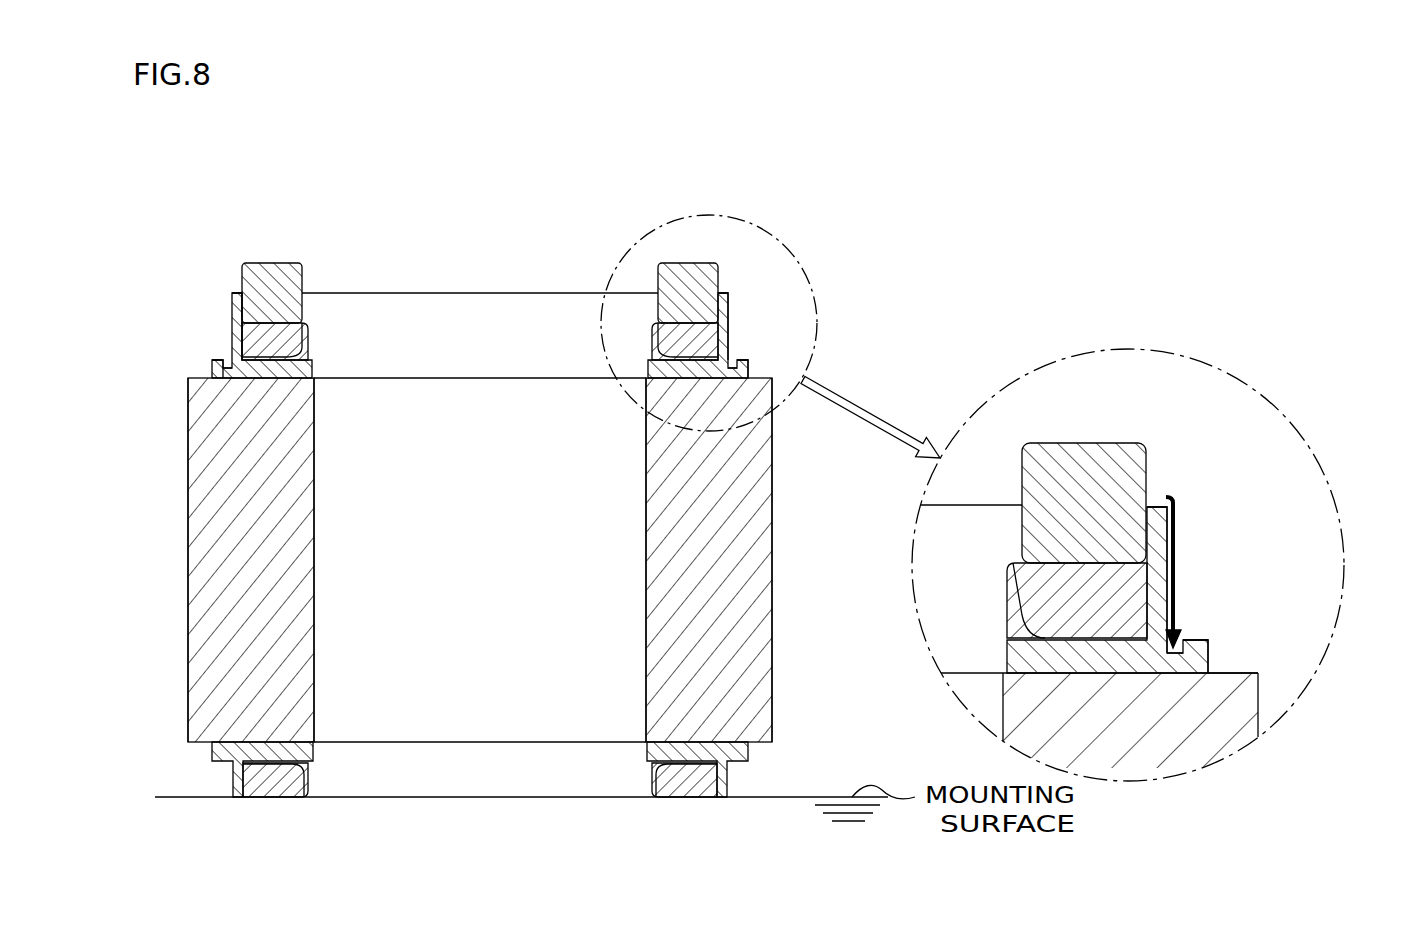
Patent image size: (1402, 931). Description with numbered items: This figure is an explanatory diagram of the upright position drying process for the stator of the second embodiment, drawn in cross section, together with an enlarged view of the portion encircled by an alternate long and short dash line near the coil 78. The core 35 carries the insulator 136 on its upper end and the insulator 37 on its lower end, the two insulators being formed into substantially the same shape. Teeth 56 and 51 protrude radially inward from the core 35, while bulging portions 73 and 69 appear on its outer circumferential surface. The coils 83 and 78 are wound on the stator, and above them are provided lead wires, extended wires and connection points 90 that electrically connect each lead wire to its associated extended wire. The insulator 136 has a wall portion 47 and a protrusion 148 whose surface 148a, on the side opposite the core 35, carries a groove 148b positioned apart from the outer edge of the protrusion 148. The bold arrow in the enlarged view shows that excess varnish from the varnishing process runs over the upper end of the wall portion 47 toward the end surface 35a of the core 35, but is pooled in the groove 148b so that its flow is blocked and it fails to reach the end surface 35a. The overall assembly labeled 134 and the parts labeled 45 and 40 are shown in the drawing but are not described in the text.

The bearing device 134 is at (245, 203).
The connection point 90 is at (282, 263).
The insulator 136 is at (215, 302).
The wall portion 47 is at (232, 322).
The coil 83 is at (296, 338).
The coil 78 is at (660, 338).
The first plate 45 is at (313, 368).
The second plate 40 is at (646, 370).
The protrusion 148 is at (211, 372).
The surface of the protrusion 148a is at (216, 362).
The groove 148b is at (227, 350).
The core 35 is at (172, 530).
The tooth 56 is at (314, 560).
The tooth 51 is at (646, 560).
The bulging portion 73 is at (188, 615).
The bulging portion 69 is at (773, 615).
The insulator 37 is at (198, 768).
The end surface of the core 35a is at (1234, 672).